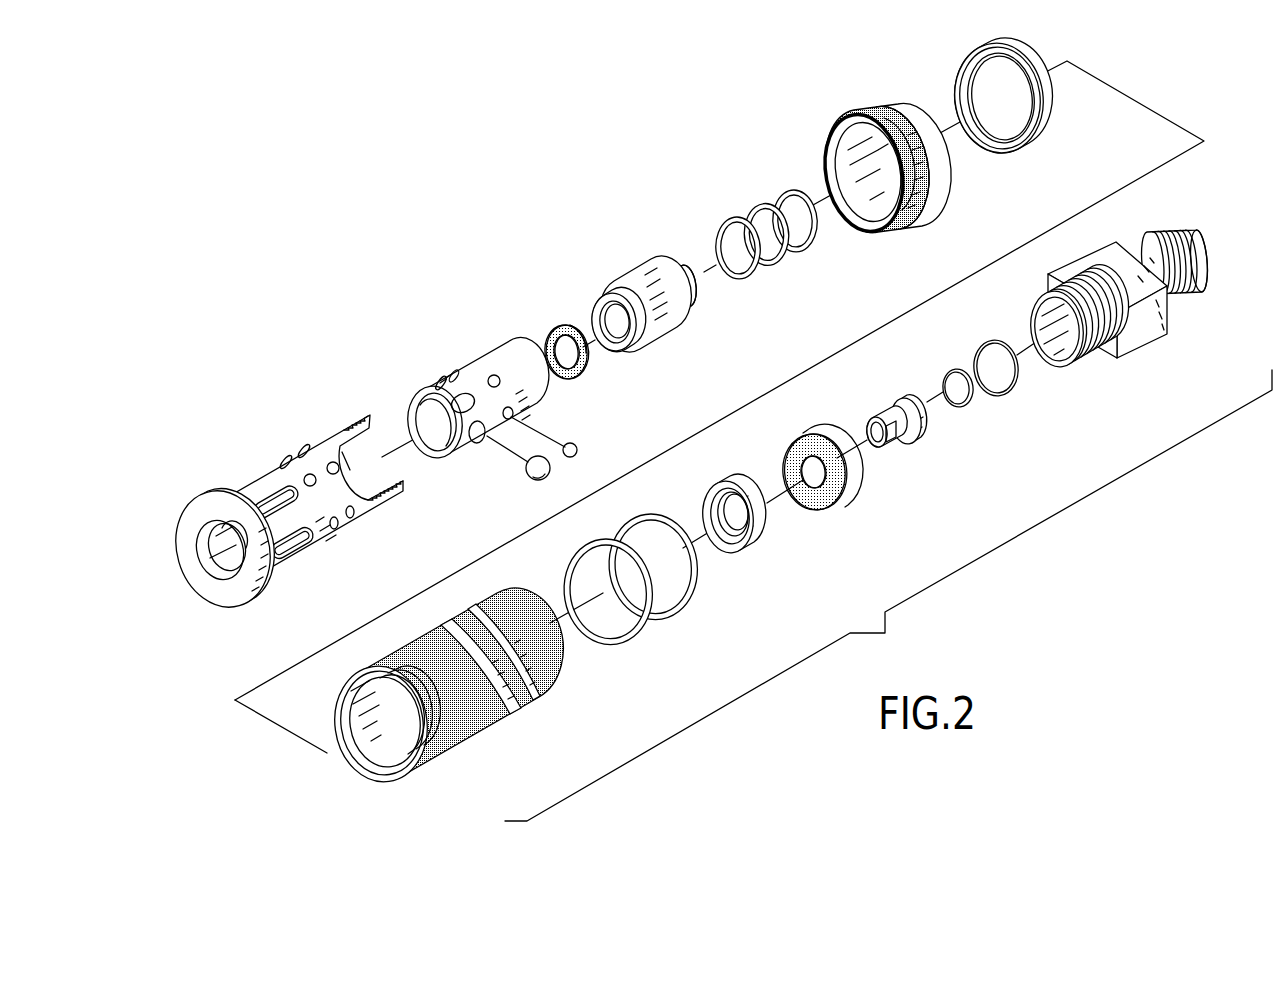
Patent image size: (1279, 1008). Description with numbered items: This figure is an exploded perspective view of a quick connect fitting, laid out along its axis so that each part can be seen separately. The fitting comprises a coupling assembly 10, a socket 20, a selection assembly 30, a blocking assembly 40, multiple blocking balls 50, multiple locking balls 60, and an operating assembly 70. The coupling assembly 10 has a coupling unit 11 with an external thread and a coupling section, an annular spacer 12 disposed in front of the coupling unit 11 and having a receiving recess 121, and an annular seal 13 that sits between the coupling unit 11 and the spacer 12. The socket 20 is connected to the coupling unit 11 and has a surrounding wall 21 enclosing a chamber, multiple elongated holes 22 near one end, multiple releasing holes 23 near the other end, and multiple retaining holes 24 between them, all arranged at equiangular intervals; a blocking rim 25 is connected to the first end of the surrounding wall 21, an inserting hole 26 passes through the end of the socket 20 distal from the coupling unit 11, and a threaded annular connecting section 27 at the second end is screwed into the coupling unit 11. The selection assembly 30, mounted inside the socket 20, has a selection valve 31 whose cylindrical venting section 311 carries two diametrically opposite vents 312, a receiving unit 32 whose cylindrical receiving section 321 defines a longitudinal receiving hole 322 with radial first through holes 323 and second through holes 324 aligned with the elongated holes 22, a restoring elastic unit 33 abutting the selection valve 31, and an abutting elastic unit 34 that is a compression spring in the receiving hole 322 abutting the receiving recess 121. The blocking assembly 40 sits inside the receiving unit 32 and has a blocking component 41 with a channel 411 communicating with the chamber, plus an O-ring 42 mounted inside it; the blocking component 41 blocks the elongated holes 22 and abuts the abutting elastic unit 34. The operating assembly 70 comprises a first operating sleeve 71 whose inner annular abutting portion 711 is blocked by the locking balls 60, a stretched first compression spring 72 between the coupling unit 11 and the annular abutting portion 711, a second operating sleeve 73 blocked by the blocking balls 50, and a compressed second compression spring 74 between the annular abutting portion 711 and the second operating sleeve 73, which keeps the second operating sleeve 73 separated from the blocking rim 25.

The coupling assembly 10 is at (971, 418).
The coupling unit 11 is at (1133, 347).
The spacer 12 is at (768, 541).
The receiving recess 121 is at (733, 549).
The seal 13 is at (830, 505).
The socket 20 is at (303, 508).
The surrounding wall 21 is at (326, 455).
The elongated holes 22 is at (297, 546).
The releasing holes 23 is at (363, 508).
The retaining holes 24 is at (337, 526).
The blocking rim 25 is at (268, 590).
The inserting hole 26 is at (222, 560).
The connecting section 27 is at (358, 423).
The selection assembly 30 is at (707, 339).
The selection valve 31 is at (897, 443).
The venting section 311 is at (880, 422).
The vents 312 is at (897, 441).
The receiving unit 32 is at (465, 406).
The receiving section 321 is at (464, 383).
The receiving hole 322 is at (420, 418).
The first through holes 323 is at (471, 446).
The second through holes 324 is at (513, 412).
The restoring elastic unit 33 is at (1019, 394).
The abutting elastic unit 34 is at (752, 228).
The blocking assembly 40 is at (622, 316).
The blocking component 41 is at (619, 302).
The channel 411 is at (606, 318).
The O-ring 42 is at (548, 339).
The blocking balls 50 is at (531, 482).
The locking balls 60 is at (578, 448).
The operating assembly 70 is at (683, 417).
The first operating sleeve 71 is at (441, 693).
The annular abutting portion 711 is at (400, 742).
The first compression spring 72 is at (652, 626).
The second operating sleeve 73 is at (851, 115).
The second compression spring 74 is at (959, 79).